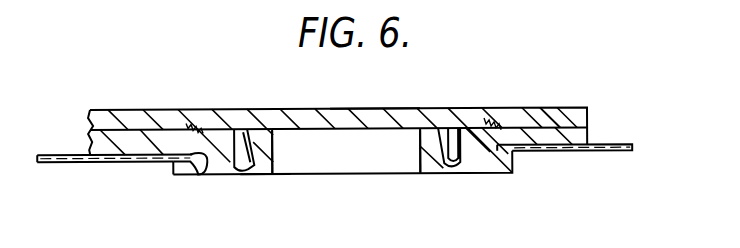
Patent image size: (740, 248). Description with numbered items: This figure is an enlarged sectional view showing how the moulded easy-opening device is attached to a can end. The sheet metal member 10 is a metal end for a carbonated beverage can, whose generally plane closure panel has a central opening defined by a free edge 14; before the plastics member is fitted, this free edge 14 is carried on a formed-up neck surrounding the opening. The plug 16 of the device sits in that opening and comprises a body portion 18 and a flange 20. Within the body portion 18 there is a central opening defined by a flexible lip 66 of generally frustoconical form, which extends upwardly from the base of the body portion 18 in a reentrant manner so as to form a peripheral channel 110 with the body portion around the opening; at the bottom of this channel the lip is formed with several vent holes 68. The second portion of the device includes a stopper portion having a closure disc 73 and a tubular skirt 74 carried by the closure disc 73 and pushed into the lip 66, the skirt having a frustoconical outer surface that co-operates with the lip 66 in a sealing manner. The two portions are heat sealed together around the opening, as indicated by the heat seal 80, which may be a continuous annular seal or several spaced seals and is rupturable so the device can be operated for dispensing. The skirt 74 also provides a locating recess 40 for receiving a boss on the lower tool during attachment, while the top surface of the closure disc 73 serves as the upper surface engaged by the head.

The sheet metal member 10 is at (66, 163).
The free edge 14 is at (205, 178).
The plug 16 is at (503, 173).
The body portion 18 is at (477, 156).
The flange 20 is at (553, 132).
The locating recess 40 is at (277, 150).
The flexible lip 66 is at (258, 176).
The vent holes 68 is at (450, 172).
The closure disc 73 is at (371, 113).
The tubular skirt 74 is at (423, 148).
The heat seal 80 is at (495, 124).
The peripheral channel 110 is at (248, 158).